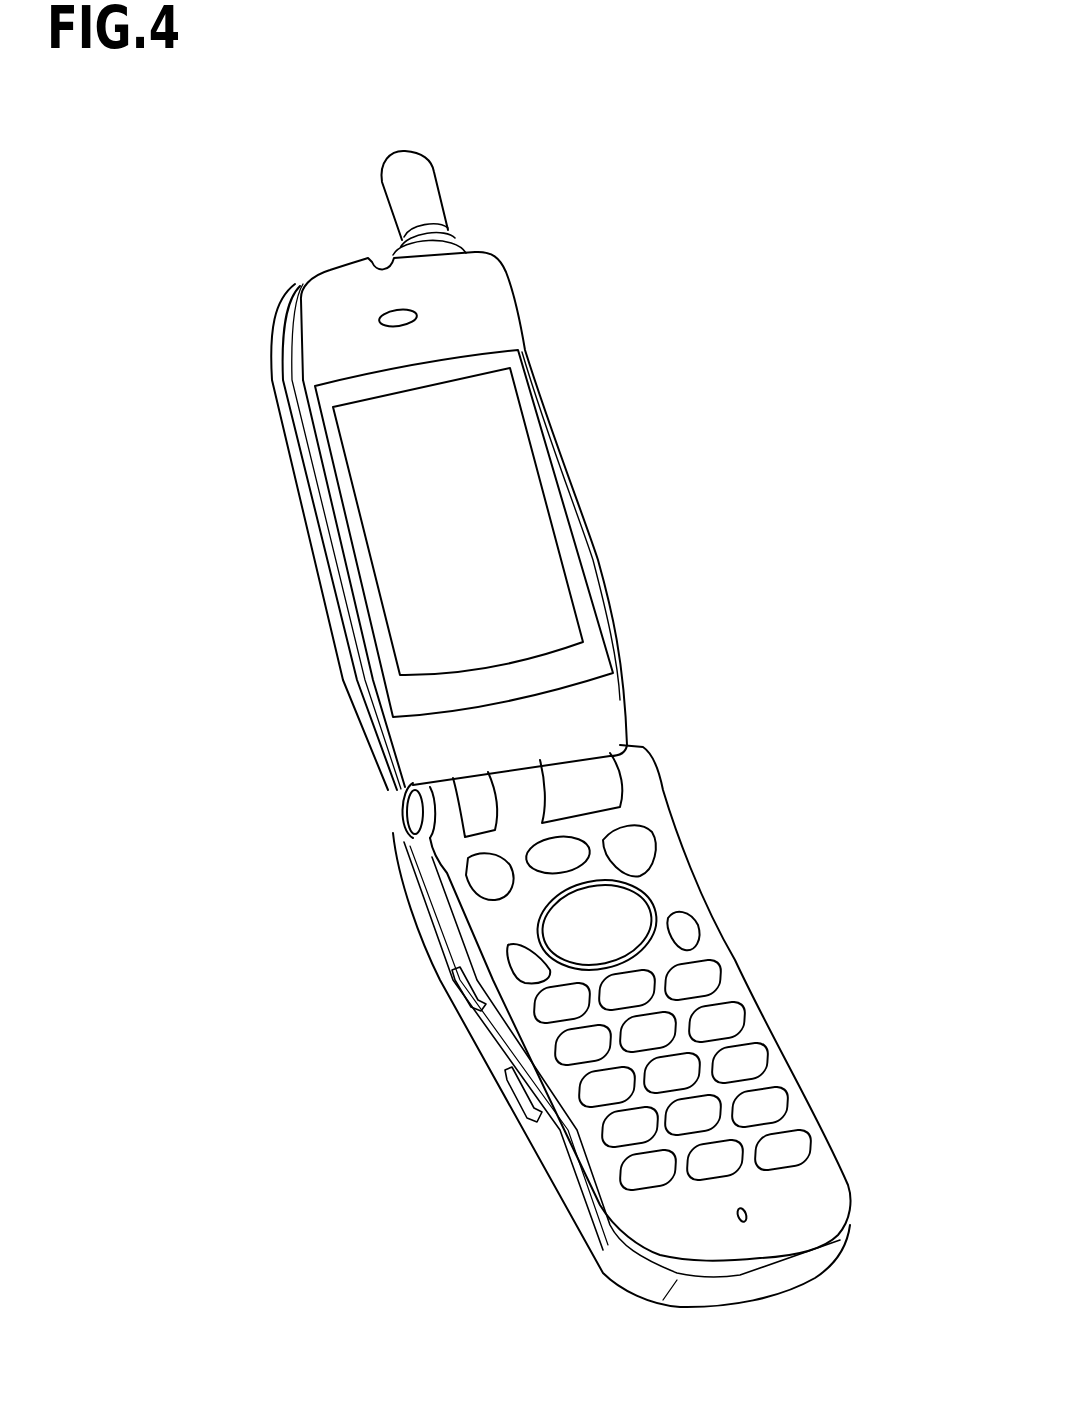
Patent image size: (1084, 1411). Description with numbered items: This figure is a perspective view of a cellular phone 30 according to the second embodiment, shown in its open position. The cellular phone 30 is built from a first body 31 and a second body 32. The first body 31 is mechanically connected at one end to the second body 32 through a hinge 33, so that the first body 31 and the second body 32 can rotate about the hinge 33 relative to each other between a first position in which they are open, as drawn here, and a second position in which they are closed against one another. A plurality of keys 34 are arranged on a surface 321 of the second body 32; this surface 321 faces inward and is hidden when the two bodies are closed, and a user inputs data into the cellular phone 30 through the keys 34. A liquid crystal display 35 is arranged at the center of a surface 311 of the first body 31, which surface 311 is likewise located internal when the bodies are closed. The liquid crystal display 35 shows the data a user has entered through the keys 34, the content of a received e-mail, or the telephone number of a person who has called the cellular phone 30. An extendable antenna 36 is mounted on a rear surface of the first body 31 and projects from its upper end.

The cellular phone 30 is at (190, 287).
The first body 31 is at (292, 466).
The surface of the first body 311 is at (465, 338).
The second body 32 is at (673, 883).
The surface of the second body 321 is at (815, 1190).
The hinge 33 is at (406, 816).
The keys 34 is at (750, 1063).
The liquid crystal display 35 is at (533, 587).
The extendable antenna 36 is at (420, 188).